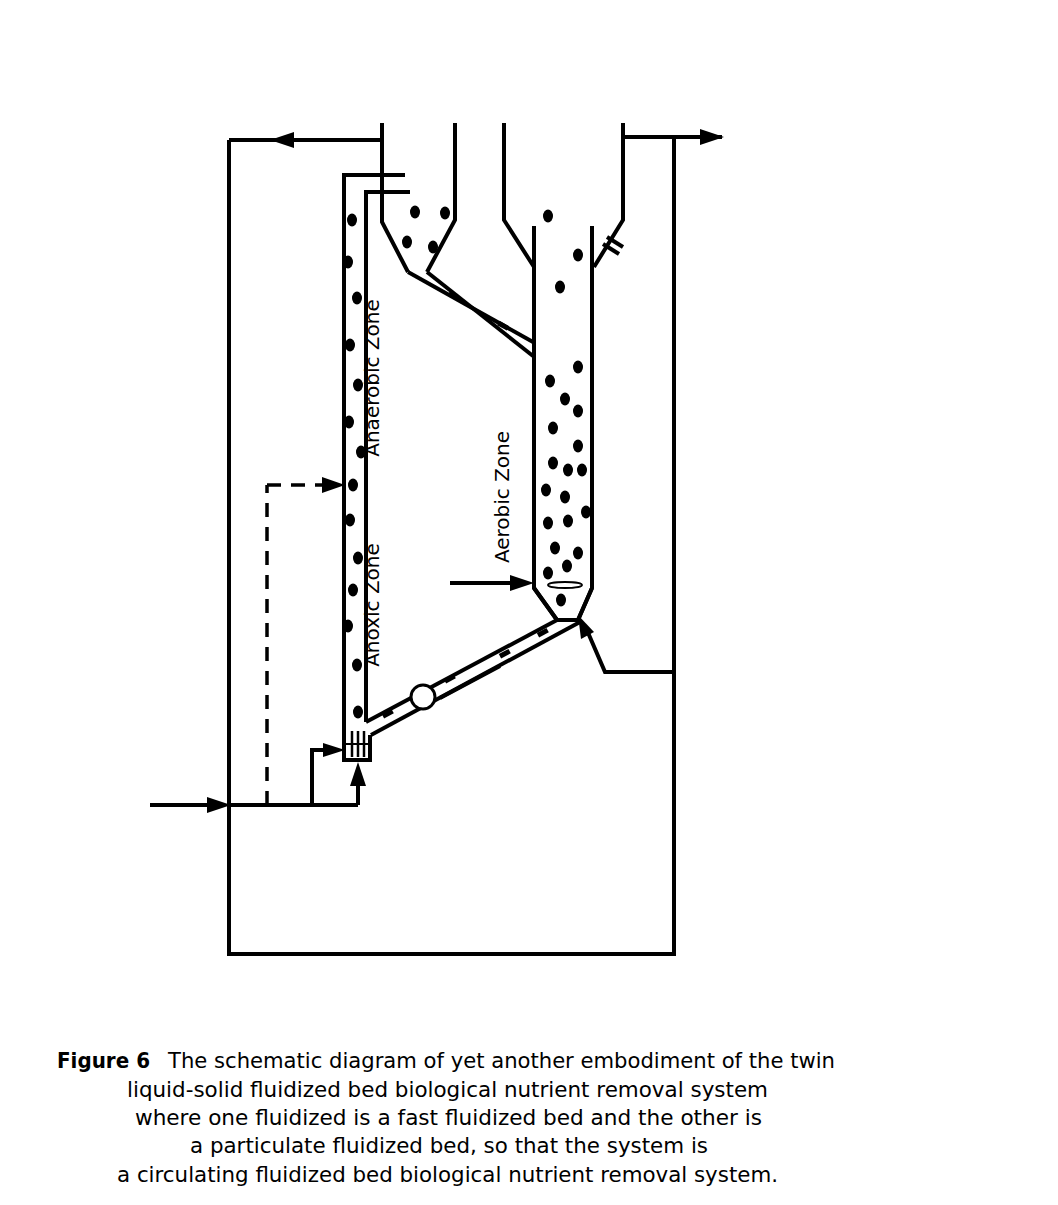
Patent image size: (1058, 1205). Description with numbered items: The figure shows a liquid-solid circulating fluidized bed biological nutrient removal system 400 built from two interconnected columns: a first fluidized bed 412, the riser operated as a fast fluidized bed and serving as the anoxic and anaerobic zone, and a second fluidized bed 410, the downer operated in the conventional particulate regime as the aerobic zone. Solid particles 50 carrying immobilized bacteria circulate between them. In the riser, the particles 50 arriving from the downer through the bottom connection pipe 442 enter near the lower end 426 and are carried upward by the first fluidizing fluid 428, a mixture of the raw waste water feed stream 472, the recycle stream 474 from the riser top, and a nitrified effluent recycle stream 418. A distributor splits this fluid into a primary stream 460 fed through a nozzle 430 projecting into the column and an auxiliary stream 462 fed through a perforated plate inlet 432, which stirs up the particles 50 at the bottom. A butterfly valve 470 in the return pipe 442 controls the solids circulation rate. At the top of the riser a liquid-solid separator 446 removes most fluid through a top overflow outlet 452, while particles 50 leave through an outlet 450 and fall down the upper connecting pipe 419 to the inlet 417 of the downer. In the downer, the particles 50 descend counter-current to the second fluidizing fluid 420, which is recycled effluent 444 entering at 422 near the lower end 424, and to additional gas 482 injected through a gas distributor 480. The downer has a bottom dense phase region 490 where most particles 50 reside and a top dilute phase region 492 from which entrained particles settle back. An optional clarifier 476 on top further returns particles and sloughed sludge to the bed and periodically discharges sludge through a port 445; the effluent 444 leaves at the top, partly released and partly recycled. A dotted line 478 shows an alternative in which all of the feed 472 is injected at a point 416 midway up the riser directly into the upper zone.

The liquid-solid circulating fluidized bed biological nutrient removal system 400 is at (165, 130).
The second fluidized bed 410 is at (568, 430).
The first fluidized bed 412 is at (357, 417).
The feed injection point 416 is at (350, 482).
The inlet 417 is at (537, 350).
The nitrified effluent recycle stream 418 is at (683, 898).
The upper connecting pipe 419 is at (463, 312).
The second fluidizing fluid 420 is at (638, 677).
The second fluidizing fluid entry 422 is at (572, 608).
The lower end of second fluidized bed 424 is at (578, 603).
The lower end of first fluidized bed 426 is at (367, 727).
The first fluidizing fluid 428 is at (287, 813).
The nozzle 430 is at (370, 735).
The perforated plate inlet 432 is at (338, 738).
The bottom connection pipe 442 is at (467, 668).
The effluent 444 is at (703, 128).
The sludge discharge port 445 is at (628, 252).
The liquid-solid separator 446 is at (415, 175).
The separator bottom outlet 450 is at (418, 265).
The top fluid overflow outlet 452 is at (380, 137).
The primary stream 460 is at (343, 817).
The auxiliary stream 462 is at (310, 778).
The butterfly valve 470 is at (433, 703).
The raw waste water feed stream 472 is at (150, 790).
The recycle stream 474 is at (229, 652).
The clarifier 476 is at (563, 160).
The dotted feed line 478 is at (262, 590).
The gas distributor 480 is at (575, 582).
The additional gas 482 is at (463, 583).
The dense phase region 490 is at (568, 543).
The dilute phase region 492 is at (568, 307).
The solid particles 50 is at (344, 260).